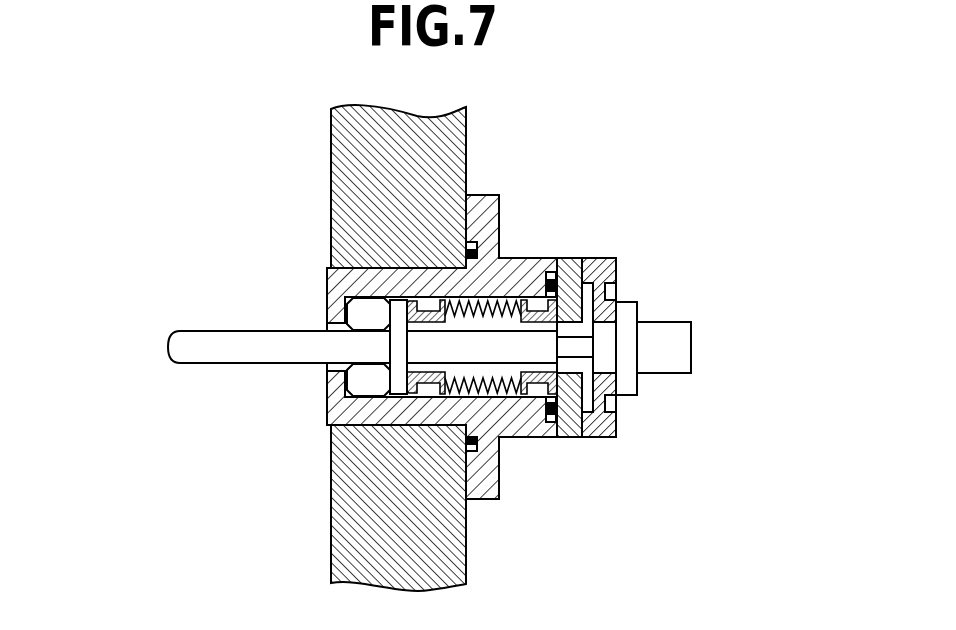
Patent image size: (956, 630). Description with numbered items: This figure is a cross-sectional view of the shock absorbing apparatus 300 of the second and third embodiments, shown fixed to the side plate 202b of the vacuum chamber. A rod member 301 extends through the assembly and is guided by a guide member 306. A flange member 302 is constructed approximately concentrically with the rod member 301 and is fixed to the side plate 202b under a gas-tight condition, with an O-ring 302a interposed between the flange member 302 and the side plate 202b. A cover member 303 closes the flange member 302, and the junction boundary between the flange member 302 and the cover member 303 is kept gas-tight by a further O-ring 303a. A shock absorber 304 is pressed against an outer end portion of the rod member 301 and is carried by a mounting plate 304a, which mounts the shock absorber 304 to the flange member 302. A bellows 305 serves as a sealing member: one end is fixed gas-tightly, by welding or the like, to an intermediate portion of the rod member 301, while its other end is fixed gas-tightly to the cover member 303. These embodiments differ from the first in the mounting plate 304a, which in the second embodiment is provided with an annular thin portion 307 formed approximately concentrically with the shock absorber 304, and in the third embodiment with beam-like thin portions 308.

The side plate 202b is at (352, 515).
The shock absorbing apparatus 300 is at (312, 444).
The rod member 301 is at (190, 347).
The flange member 302 is at (370, 278).
The O-ring 302a is at (467, 253).
The cover member 303 is at (683, 313).
The O-ring 303a is at (550, 280).
The shock absorber 304 is at (672, 348).
The mounting plate 304a is at (617, 425).
The bellows 305 is at (493, 392).
The guide member 306 is at (357, 316).
The annular thin portion 307 is at (707, 334).
The beam-like thin portions 308 is at (610, 403).